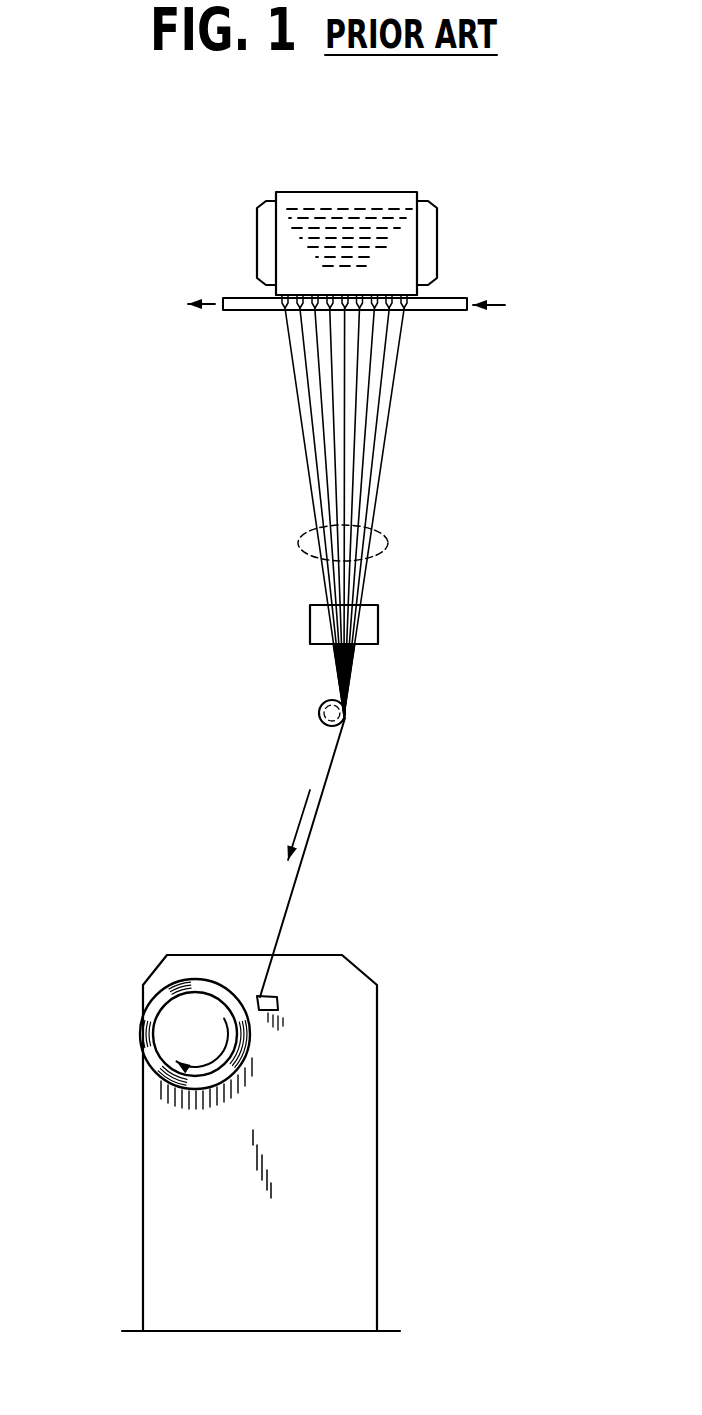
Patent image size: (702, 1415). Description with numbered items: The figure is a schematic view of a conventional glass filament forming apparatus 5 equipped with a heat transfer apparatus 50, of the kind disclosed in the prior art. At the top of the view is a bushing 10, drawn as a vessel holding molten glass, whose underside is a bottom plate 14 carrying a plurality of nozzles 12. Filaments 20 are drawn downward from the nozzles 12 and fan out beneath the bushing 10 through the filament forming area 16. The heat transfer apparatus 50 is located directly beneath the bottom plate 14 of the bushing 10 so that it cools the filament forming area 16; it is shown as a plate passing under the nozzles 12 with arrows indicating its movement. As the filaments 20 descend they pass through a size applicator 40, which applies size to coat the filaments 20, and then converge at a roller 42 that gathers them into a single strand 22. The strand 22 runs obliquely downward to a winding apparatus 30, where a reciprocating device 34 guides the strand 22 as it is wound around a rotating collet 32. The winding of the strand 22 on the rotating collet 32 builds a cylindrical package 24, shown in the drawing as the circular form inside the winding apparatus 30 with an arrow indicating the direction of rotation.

The glass filament forming apparatus 5 is at (193, 402).
The bushing 10 is at (318, 191).
The nozzles 12 is at (383, 313).
The bottom plate 14 is at (368, 295).
The filament forming area 16 is at (313, 313).
The filaments 20 is at (388, 543).
The strand 22 is at (327, 762).
The cylindrical package 24 is at (150, 1031).
The winding apparatus 30 is at (155, 965).
The rotating collet 32 is at (168, 1050).
The reciprocating device 34 is at (278, 1004).
The size applicator 40 is at (378, 622).
The roller 42 is at (319, 706).
The heat transfer apparatus 50 is at (452, 296).